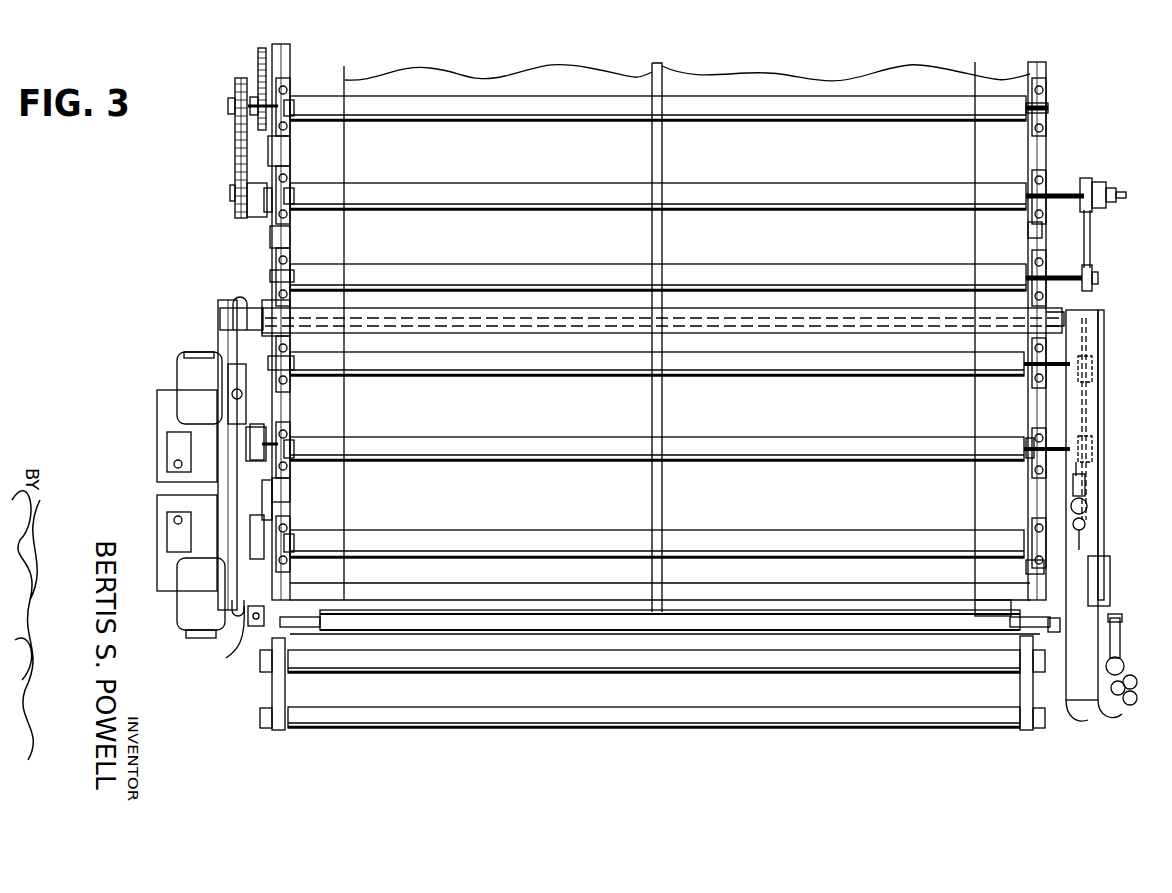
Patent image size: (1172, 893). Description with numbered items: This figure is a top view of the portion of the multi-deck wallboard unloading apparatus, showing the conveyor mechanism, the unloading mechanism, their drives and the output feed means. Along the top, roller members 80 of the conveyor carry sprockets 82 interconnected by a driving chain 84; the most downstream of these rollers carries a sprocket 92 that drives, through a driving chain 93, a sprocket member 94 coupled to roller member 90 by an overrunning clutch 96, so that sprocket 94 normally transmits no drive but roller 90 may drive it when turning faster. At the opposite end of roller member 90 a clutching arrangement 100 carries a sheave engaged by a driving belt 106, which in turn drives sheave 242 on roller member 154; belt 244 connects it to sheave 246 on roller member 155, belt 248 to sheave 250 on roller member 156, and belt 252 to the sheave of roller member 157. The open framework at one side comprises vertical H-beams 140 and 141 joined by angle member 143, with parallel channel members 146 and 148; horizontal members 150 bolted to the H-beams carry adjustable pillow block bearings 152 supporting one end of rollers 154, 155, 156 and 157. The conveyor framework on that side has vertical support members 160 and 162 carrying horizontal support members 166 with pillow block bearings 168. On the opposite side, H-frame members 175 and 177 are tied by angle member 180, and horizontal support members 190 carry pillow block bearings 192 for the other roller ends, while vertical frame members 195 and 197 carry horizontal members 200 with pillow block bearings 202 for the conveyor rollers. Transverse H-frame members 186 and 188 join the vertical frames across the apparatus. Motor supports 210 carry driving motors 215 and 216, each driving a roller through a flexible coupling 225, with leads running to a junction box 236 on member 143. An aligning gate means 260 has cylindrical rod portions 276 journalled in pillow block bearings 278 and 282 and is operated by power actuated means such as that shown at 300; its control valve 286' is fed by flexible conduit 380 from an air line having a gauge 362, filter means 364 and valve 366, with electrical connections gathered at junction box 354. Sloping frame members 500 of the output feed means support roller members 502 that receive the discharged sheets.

The roller members 80 is at (690, 118).
The sprockets 82 is at (252, 96).
The driving chain 84 is at (258, 66).
The roller member 90 is at (684, 200).
The sprocket 92 is at (234, 84).
The driving chain 93 is at (236, 146).
The sprocket member 94 is at (230, 192).
The overrunning clutch 96 is at (250, 218).
The clutching arrangement 100 is at (1094, 176).
The driving belt 106 is at (1092, 230).
The H-beam 140 is at (256, 316).
The H-beam 141 is at (215, 633).
The angle member 143 is at (228, 326).
The channel member 146 is at (260, 380).
The channel member 148 is at (272, 500).
The horizontal member 150 is at (290, 486).
The pillow block bearings 152 is at (290, 268).
The roller member 154 is at (452, 262).
The roller member 155 is at (474, 372).
The roller member 156 is at (486, 440).
The roller member 157 is at (464, 530).
The vertical support member 160 is at (290, 232).
The vertical support member 162 is at (290, 80).
The horizontal support member 166 is at (290, 156).
The pillow block bearings 168 is at (290, 92).
The H-frame member 175 is at (1066, 316).
The H-frame member 177 is at (1046, 588).
The angle member 180 is at (1100, 390).
The H-frame member 186 is at (806, 310).
The H-frame member 188 is at (756, 586).
The horizontal support member 190 is at (1034, 408).
The pillow block bearings 192 is at (1032, 260).
The vertical frame member 195 is at (1028, 230).
The vertical frame member 197 is at (1030, 78).
The horizontal support member 200 is at (1046, 138).
The pillow block bearings 202 is at (1044, 90).
The motor supports 210 is at (158, 412).
The driving motor 215 is at (176, 366).
The driving motor 216 is at (176, 612).
The flexible coupling 225 is at (250, 436).
The junction box 236 is at (232, 396).
The sheave 242 is at (1094, 272).
The drive belt 244 is at (1086, 330).
The sheave 246 is at (1088, 354).
The drive belt 248 is at (1092, 374).
The sheave 250 is at (1090, 444).
The drive belt 252 is at (1082, 470).
The aligning gate means 260 is at (820, 622).
The cylindrical rod portions 276 is at (314, 624).
The pillow block bearings 278 is at (264, 614).
The pillow block bearings 282 is at (1048, 626).
The control valve 286' is at (1142, 701).
The power actuated means 300 is at (1120, 652).
The junction box 354 is at (1108, 602).
The gauge 362 is at (1086, 486).
The filter means 364 is at (1088, 506).
The valve 366 is at (1086, 524).
The flexible conduit 380 is at (1082, 722).
The sloping frame members 500 is at (276, 682).
The roller members 502 is at (664, 708).